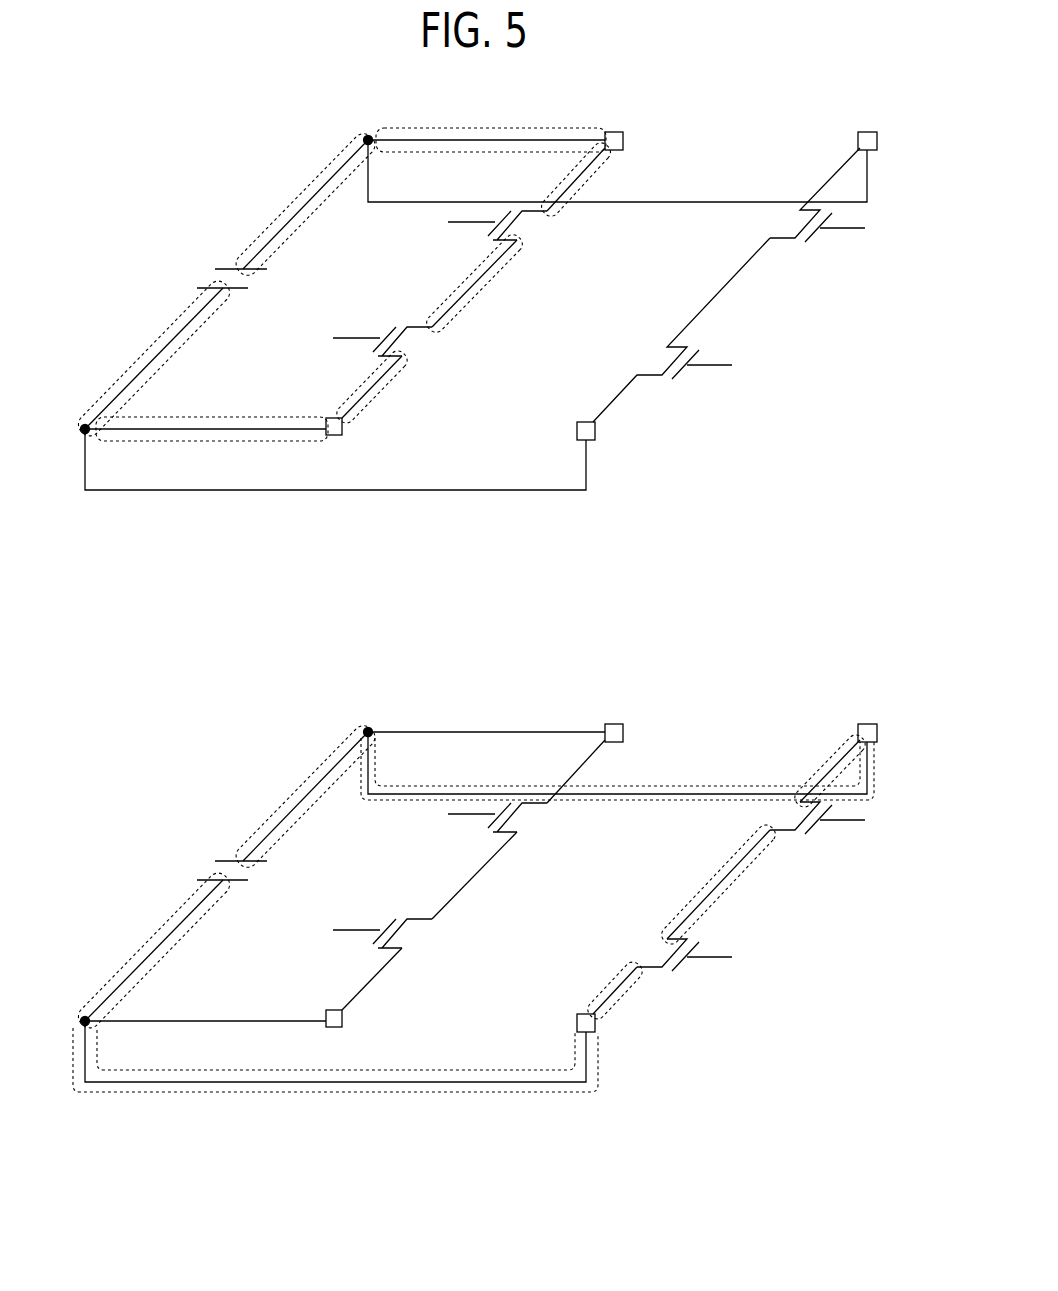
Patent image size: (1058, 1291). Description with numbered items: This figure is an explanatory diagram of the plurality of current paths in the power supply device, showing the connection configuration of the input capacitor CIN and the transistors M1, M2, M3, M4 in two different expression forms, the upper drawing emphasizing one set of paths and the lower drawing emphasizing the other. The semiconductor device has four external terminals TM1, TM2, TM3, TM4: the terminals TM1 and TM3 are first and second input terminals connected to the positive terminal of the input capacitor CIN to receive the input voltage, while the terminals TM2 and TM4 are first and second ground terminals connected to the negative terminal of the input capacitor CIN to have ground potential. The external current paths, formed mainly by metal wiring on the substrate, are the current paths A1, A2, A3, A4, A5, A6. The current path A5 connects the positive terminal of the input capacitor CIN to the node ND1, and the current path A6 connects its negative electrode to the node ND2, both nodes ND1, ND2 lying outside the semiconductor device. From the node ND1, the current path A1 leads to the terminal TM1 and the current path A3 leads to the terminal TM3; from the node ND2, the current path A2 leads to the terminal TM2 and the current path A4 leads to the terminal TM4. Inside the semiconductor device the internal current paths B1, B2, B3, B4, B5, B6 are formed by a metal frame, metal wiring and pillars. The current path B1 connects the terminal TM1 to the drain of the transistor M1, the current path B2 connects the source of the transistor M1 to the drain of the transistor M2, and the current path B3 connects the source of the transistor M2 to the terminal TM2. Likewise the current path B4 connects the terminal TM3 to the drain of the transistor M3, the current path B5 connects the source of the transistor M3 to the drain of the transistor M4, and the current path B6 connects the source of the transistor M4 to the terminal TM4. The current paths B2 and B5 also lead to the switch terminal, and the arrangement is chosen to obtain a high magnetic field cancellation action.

The node ND1 is at (366, 137).
The node ND2 is at (83, 425).
The terminal TM1 is at (614, 129).
The terminal TM2 is at (345, 427).
The terminal TM3 is at (867, 129).
The terminal TM4 is at (597, 435).
The transistor M1 is at (490, 230).
The transistor M2 is at (372, 353).
The transistor M3 is at (783, 240).
The transistor M4 is at (650, 377).
The input capacitor CIN is at (210, 271).
The current path A1 is at (493, 127).
The current path A2 is at (205, 441).
The current path A3 is at (663, 785).
The current path A4 is at (345, 1095).
The current path A5 is at (281, 198).
The current path A6 is at (152, 345).
The current path B1 is at (598, 186).
The current path B2 is at (497, 285).
The current path B3 is at (392, 383).
The current path B4 is at (825, 760).
The current path B5 is at (723, 898).
The current path B6 is at (623, 995).